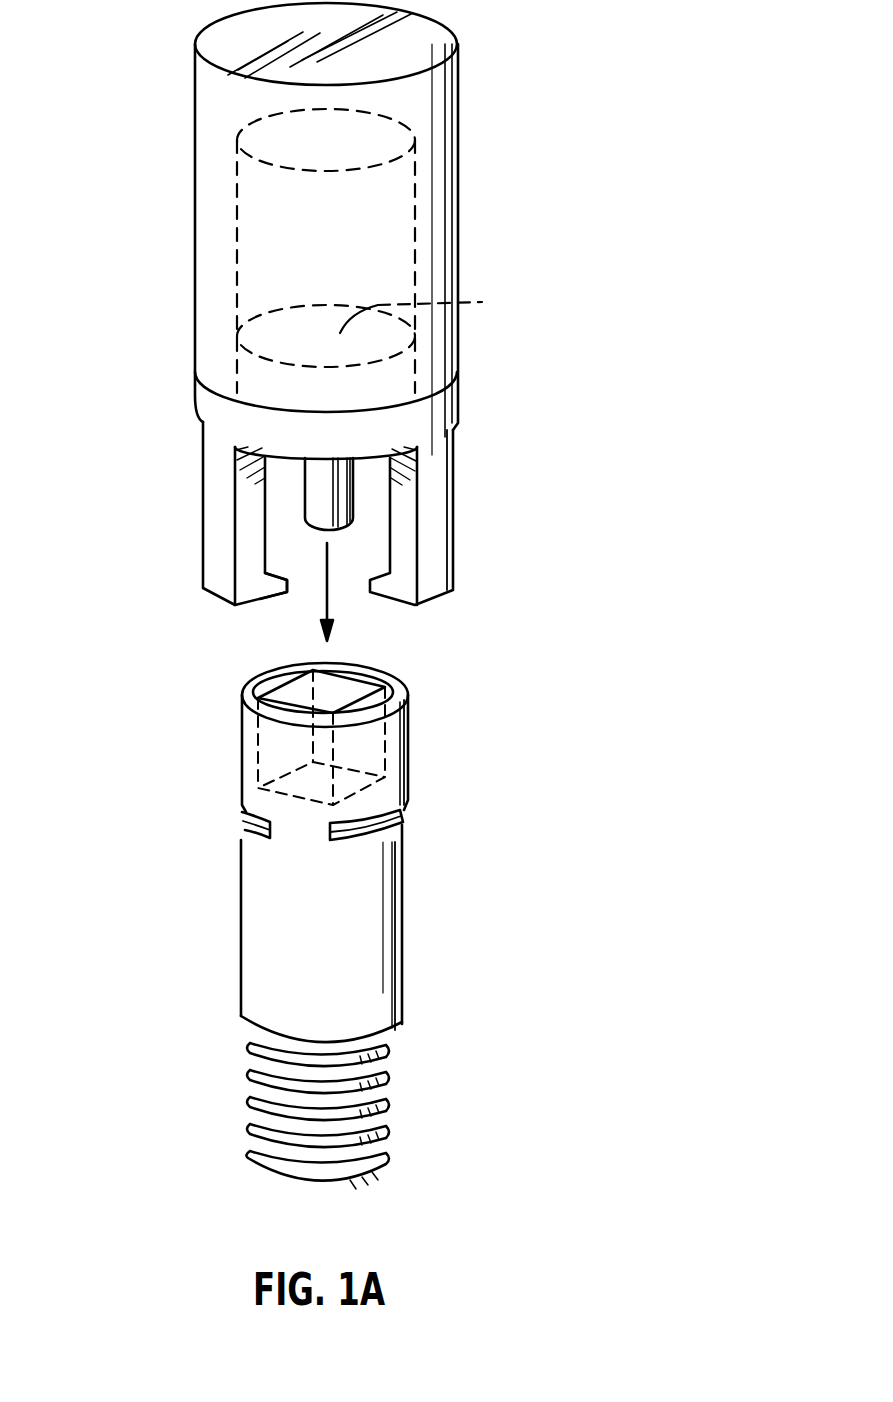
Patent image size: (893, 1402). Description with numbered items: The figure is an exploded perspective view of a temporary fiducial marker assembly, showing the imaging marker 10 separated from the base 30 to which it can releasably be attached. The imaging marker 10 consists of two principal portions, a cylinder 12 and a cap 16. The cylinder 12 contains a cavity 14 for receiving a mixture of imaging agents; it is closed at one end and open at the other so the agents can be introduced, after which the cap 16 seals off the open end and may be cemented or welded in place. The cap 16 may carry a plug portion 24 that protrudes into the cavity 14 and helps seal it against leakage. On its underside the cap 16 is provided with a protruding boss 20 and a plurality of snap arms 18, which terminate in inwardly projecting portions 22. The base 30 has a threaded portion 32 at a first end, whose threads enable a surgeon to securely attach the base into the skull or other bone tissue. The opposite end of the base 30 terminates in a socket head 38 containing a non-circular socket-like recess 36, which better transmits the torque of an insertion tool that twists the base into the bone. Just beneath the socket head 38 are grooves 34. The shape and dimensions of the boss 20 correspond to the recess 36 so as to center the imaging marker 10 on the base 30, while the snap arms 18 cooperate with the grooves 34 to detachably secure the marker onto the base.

The imaging marker 10 is at (99, 5).
The cylinder 12 is at (458, 132).
The cavity 14 is at (340, 279).
The cap 16 is at (542, 375).
The snap arms 18 is at (440, 547).
The boss 20 is at (320, 484).
The inwardly projecting portions 22 is at (267, 597).
The plug portion 24 is at (432, 307).
The base 30 is at (99, 672).
The threaded portion 32 is at (420, 1040).
The grooves 34 is at (398, 830).
The socket-like recess 36 is at (345, 690).
The socket head 38 is at (407, 765).